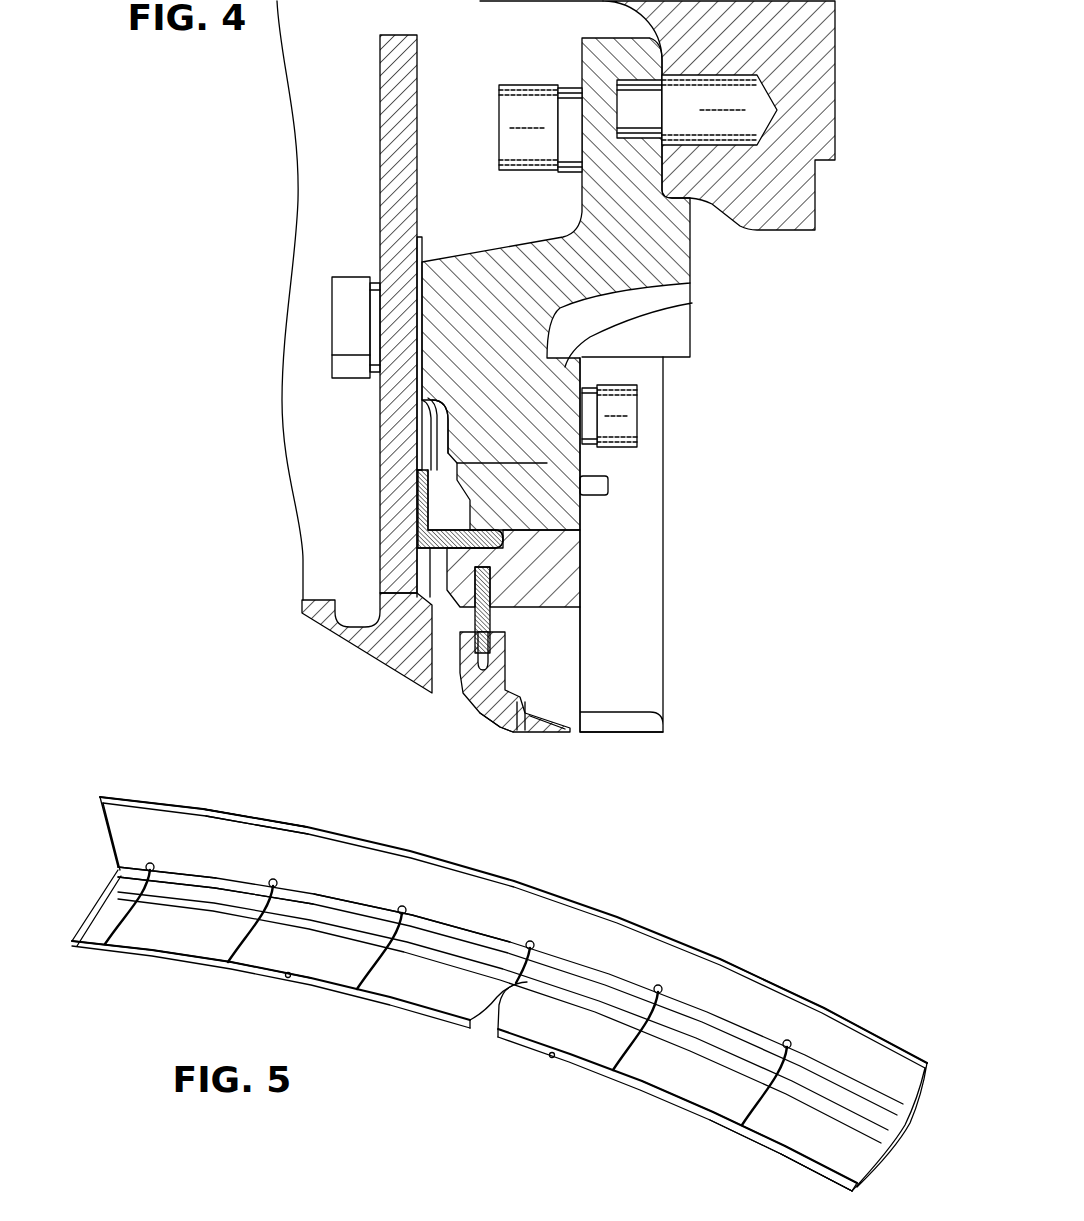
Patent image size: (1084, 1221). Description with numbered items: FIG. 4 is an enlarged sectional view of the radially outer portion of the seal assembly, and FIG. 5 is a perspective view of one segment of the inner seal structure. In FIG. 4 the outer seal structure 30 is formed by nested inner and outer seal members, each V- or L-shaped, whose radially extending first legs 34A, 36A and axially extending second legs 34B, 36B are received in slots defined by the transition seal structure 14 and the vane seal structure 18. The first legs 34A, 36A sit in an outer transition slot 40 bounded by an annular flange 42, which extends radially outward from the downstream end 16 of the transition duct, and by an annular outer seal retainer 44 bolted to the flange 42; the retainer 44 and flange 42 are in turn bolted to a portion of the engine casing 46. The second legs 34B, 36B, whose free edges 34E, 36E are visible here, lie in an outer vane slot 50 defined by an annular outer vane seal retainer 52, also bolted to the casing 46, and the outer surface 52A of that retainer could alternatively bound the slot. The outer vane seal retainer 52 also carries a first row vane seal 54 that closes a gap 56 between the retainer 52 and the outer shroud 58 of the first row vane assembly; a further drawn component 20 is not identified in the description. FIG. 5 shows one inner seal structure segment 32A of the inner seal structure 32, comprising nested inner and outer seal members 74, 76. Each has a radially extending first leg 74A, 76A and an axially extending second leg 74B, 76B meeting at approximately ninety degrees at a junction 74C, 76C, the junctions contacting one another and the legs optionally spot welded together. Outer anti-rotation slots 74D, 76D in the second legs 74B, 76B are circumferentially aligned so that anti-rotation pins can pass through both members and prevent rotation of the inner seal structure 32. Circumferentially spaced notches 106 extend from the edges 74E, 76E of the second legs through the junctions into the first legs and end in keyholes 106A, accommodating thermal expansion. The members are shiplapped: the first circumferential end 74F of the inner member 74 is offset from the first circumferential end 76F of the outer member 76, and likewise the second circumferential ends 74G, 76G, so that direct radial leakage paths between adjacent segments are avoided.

In FIG. 4, the transition seal structure 14 is at (372, 408).
In FIG. 4, the downstream end 16 is at (332, 623).
In FIG. 4, the vane seal structure 18 is at (556, 592).
In FIG. 4, the pin 20 is at (477, 607).
In FIG. 4, the outer seal structure 30 is at (416, 536).
In FIG. 5, the inner seal structure 32 is at (557, 865).
In FIG. 5, the inner seal structure segment 32A is at (641, 906).
In FIG. 4, the first leg 34A is at (398, 530).
In FIG. 4, the second leg 34B is at (432, 565).
In FIG. 4, the edge 34E is at (512, 539).
In FIG. 4, the first leg 36A is at (452, 450).
In FIG. 4, the second leg 36B is at (416, 481).
In FIG. 4, the edge 36E is at (508, 520).
In FIG. 4, the outer transition slot 40 is at (410, 443).
In FIG. 4, the annular flange 42 is at (398, 233).
In FIG. 4, the outer seal retainer 44 is at (380, 257).
In FIG. 4, the engine casing 46 is at (470, 257).
In FIG. 4, the outer vane slot 50 is at (512, 528).
In FIG. 4, the outer vane seal retainer 52 is at (692, 296).
In FIG. 4, the outer surface 52A is at (527, 457).
In FIG. 4, the first row vane seal 54 is at (492, 587).
In FIG. 4, the gap 56 is at (512, 634).
In FIG. 4, the outer shroud 58 is at (507, 725).
In FIG. 5, the inner seal member 74 is at (97, 806).
In FIG. 5, the first leg 74A is at (128, 820).
In FIG. 5, the second leg 74B is at (107, 933).
In FIG. 5, the junction 74C is at (117, 878).
In FIG. 5, the outer anti-rotation slot 74D is at (473, 1023).
In FIG. 5, the edge 74E is at (768, 1150).
In FIG. 5, the first circumferential end 74F is at (82, 924).
In FIG. 5, the second circumferential end 74G is at (862, 1028).
In FIG. 5, the outer seal member 76 is at (897, 1167).
In FIG. 5, the first leg 76A is at (222, 830).
In FIG. 5, the second leg 76B is at (207, 937).
In FIG. 5, the junction 76C is at (432, 940).
In FIG. 5, the outer anti-rotation slot 76D is at (487, 1027).
In FIG. 5, the edge 76E is at (837, 1177).
In FIG. 5, the first circumferential end 76F is at (140, 817).
In FIG. 5, the second circumferential end 76G is at (927, 1068).
In FIG. 5, the notches 106 is at (123, 940).
In FIG. 5, the keyholes 106A is at (155, 865).